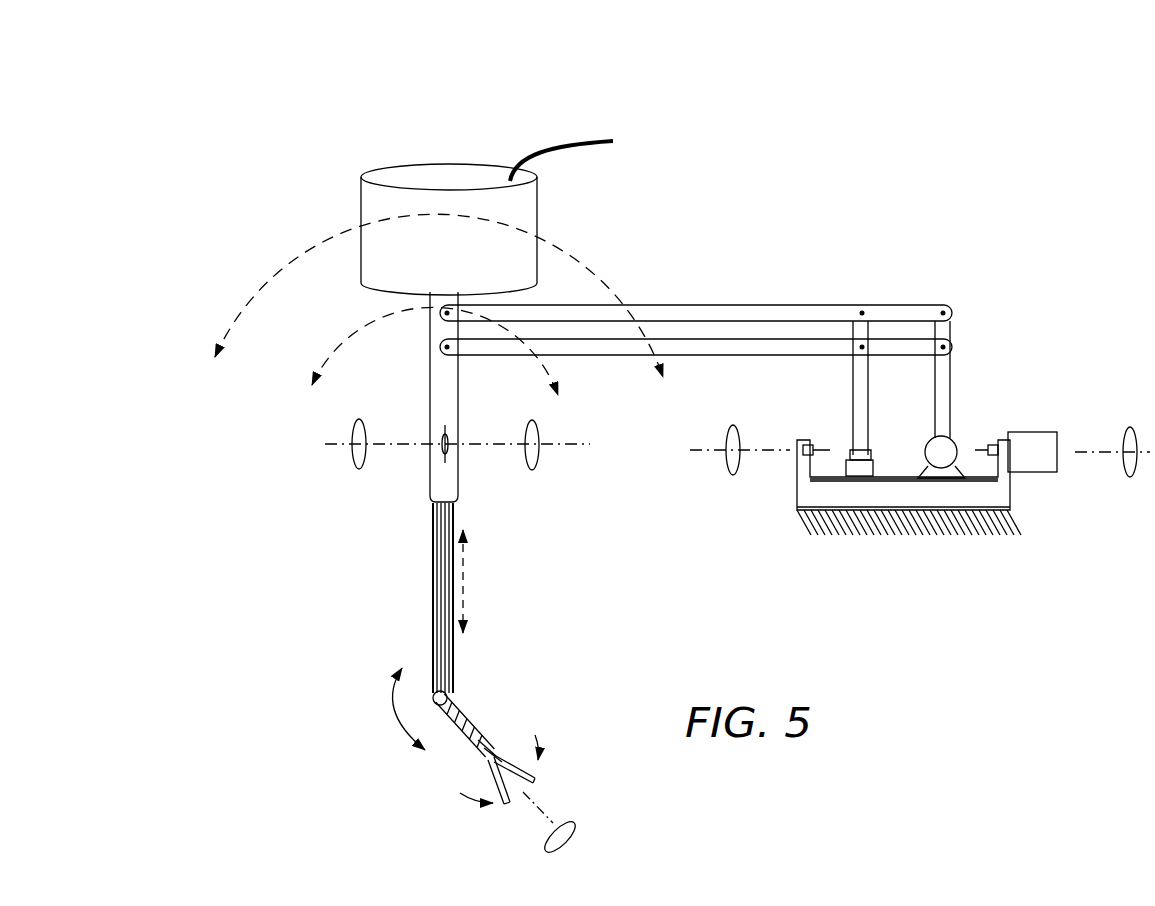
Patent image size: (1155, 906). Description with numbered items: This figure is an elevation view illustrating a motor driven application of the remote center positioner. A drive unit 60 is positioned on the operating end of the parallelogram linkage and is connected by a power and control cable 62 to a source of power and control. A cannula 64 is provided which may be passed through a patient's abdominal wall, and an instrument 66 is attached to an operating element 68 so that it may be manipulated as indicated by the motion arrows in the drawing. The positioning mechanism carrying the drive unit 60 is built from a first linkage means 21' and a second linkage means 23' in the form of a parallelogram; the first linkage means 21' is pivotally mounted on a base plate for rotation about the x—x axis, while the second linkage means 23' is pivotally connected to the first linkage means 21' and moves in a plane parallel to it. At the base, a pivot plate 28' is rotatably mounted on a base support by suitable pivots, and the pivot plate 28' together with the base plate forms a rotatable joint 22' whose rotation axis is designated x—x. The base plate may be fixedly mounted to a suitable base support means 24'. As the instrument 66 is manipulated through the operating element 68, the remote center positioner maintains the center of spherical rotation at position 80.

The drive unit 60 is at (460, 163).
The power and control cable 62 is at (597, 138).
The cannula 64 is at (430, 387).
The center of spherical rotation 80 is at (418, 462).
The operating element 68 is at (433, 598).
The instrument 66 is at (488, 768).
The second linkage means 23' is at (696, 248).
The first linkage means 21' is at (992, 374).
The rotatable joint 22' is at (834, 491).
The base support means 24' is at (975, 534).
The pivot plate 28' is at (889, 563).